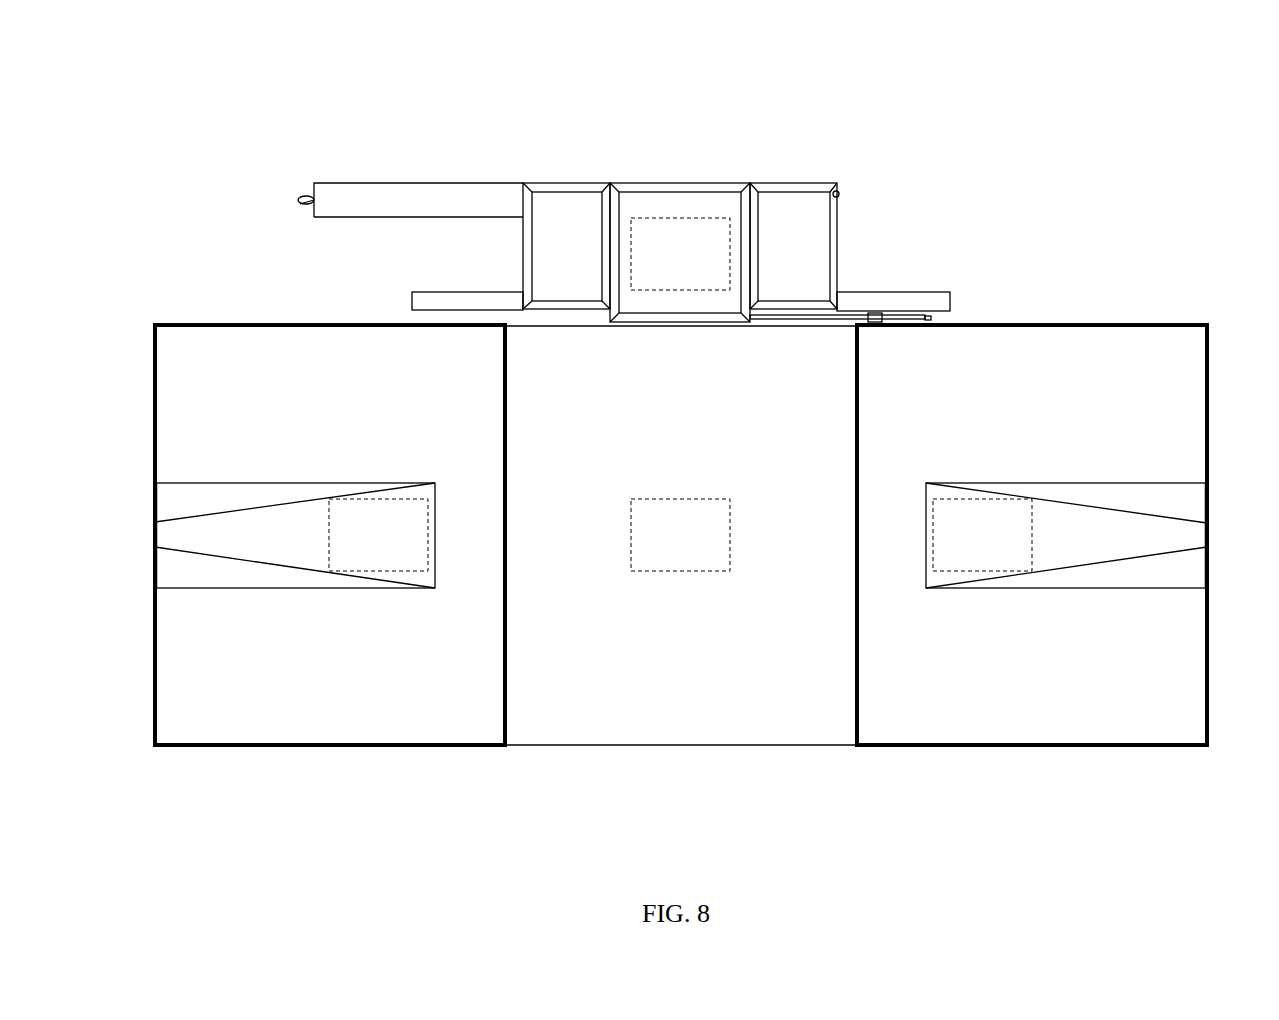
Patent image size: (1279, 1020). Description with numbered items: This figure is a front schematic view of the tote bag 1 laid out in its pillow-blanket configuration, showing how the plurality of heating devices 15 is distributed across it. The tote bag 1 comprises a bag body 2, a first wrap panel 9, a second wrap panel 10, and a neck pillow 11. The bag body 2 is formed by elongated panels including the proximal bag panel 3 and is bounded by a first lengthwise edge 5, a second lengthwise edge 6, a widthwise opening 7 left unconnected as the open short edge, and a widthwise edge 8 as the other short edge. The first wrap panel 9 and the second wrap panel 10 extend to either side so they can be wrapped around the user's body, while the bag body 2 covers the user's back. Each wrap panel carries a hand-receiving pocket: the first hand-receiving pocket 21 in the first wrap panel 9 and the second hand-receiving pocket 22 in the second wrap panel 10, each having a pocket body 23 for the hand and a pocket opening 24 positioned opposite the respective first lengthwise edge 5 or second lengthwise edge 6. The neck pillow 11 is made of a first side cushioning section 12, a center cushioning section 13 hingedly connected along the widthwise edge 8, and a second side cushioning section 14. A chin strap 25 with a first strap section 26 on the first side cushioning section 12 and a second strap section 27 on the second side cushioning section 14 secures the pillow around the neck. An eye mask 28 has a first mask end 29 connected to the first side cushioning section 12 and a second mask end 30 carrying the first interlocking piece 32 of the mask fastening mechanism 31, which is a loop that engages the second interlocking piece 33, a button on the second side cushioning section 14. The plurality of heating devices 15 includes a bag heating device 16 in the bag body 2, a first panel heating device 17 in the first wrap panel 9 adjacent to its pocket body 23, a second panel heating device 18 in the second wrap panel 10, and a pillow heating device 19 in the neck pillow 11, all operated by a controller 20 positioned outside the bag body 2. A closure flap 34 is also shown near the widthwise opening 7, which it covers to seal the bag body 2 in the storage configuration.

The tote bag 1 is at (857, 36).
The bag body 2 is at (550, 855).
The proximal bag panel 3 is at (513, 680).
The first lengthwise edge 5 is at (503, 545).
The second lengthwise edge 6 is at (859, 552).
The widthwise opening 7 is at (648, 747).
The widthwise edge 8 is at (630, 329).
The first wrap panel 9 is at (160, 362).
The second wrap panel 10 is at (1118, 340).
The neck pillow 11 is at (701, 92).
The first side cushioning section 12 is at (573, 188).
The center cushioning section 13 is at (690, 188).
The second side cushioning section 14 is at (802, 188).
The plurality of heating devices 15 is at (680, 494).
The bag heating device 16 is at (703, 500).
The first panel heating device 17 is at (412, 500).
The second panel heating device 18 is at (965, 500).
The pillow heating device 19 is at (690, 292).
The controller 20 is at (868, 323).
The first hand-receiving pocket 21 is at (297, 577).
The second hand-receiving pocket 22 is at (1118, 578).
The pocket body 23 is at (681, 535).
The pocket opening 24 is at (681, 535).
The chin strap 25 is at (622, 262).
The first strap section 26 is at (415, 302).
The second strap section 27 is at (895, 298).
The eye mask 28 is at (410, 190).
The first mask end 29 is at (520, 219).
The second mask end 30 is at (312, 219).
The mask fastening mechanism 31 is at (597, 157).
The first interlocking piece 32 is at (307, 198).
The second interlocking piece 33 is at (840, 194).
The closure flap 34 is at (918, 321).